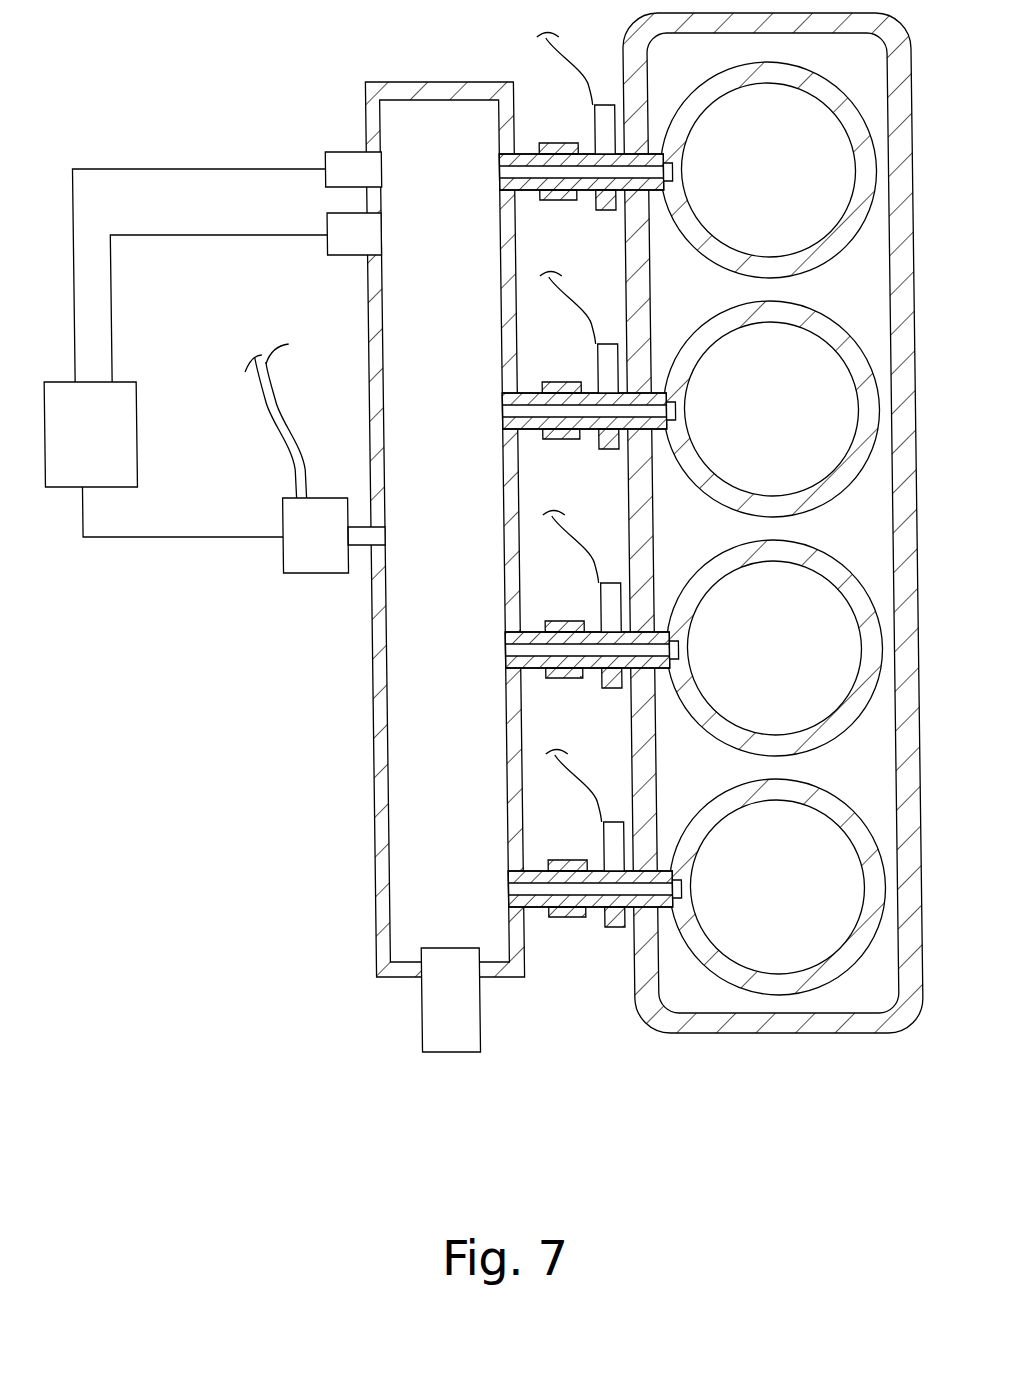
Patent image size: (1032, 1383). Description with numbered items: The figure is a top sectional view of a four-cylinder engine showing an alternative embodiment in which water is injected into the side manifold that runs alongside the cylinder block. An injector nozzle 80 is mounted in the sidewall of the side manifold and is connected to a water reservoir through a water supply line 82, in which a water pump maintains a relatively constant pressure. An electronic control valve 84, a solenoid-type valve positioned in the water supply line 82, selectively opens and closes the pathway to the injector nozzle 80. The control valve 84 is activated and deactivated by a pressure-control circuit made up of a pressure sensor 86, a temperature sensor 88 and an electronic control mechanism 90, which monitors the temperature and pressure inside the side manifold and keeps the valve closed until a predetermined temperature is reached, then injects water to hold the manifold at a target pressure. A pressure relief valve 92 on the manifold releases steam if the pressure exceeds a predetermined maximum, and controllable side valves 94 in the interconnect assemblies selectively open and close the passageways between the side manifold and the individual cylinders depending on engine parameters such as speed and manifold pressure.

The injector nozzle 80 is at (385, 533).
The water supply line 82 is at (284, 440).
The electronic control valve 84 is at (289, 578).
The pressure sensor 86 is at (343, 150).
The temperature sensor 88 is at (348, 257).
The electronic control mechanism 90 is at (65, 492).
The pressure relief valve 92 is at (406, 1015).
The controllable side valves 94 is at (602, 122).